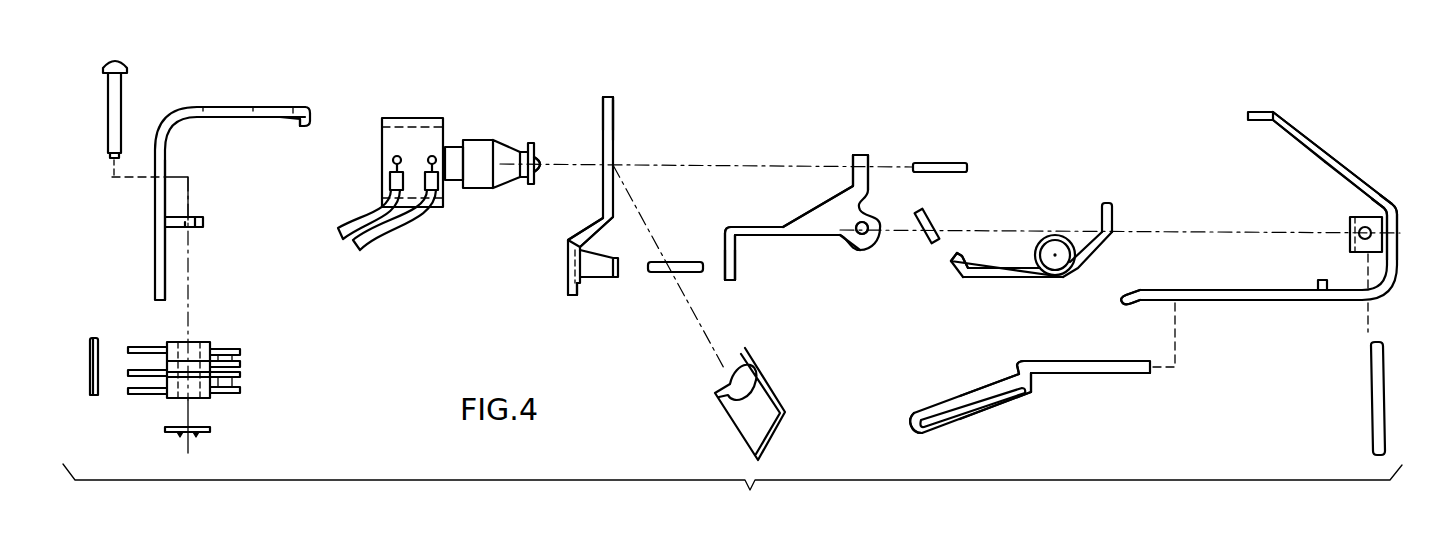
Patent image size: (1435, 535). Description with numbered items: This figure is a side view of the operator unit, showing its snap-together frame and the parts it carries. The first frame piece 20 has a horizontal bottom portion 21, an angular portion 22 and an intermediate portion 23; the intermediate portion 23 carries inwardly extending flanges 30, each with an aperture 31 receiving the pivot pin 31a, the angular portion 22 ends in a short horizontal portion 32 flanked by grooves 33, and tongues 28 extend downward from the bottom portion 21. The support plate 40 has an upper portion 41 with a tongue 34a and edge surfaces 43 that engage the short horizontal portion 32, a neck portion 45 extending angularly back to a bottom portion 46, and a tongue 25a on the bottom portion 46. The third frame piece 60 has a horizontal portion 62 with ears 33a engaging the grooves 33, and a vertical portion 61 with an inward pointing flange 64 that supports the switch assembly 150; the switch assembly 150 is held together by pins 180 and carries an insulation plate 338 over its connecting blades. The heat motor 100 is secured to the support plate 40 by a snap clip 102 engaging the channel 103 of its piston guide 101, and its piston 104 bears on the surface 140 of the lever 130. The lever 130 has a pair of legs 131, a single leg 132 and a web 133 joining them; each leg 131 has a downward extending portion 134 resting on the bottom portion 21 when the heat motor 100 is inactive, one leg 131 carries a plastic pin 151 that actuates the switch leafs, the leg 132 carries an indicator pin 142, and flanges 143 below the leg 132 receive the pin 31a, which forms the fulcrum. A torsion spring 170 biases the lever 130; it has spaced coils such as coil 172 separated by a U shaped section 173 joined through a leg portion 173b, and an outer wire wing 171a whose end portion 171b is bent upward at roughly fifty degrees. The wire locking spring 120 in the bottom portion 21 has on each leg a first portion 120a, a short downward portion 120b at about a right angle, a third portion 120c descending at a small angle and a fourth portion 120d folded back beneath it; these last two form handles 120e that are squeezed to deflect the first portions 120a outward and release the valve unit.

The switch assembly pin 180 is at (126, 64).
The third frame piece 60 is at (244, 92).
The horizontal portion 62 is at (273, 107).
The ears 33a is at (309, 113).
The vertical portion 61 is at (167, 152).
The inward pointing flange 64 is at (203, 222).
The switch assembly 150 is at (220, 330).
The insulation plate 338 is at (98, 395).
The heat motor 100 is at (428, 112).
The channel 103 is at (453, 147).
The piston guide 101 is at (486, 140).
The piston 104 is at (542, 165).
The support plate 40 is at (599, 108).
The tongue 34a is at (613, 100).
The edge surfaces 43 is at (613, 110).
The upper portion 41 is at (613, 167).
The neck portion 45 is at (580, 235).
The bottom portion 46 is at (568, 272).
The tongue 25a is at (575, 295).
The plastic pin 151 is at (674, 262).
The snap clip 102 is at (780, 403).
The surface 140 is at (853, 167).
The single leg 132 is at (863, 157).
The indicator pin 142 is at (967, 162).
The legs 131 is at (735, 227).
The web 133 is at (823, 205).
The downward extending portion 134 is at (740, 257).
The lever 130 is at (855, 245).
The flanges 143 is at (857, 232).
The end portion 171b is at (933, 218).
The outer wire wing 171a is at (983, 270).
The torsion spring 170 is at (1015, 283).
The coil 172 is at (1053, 233).
The U shaped section 173 is at (1093, 222).
The leg portion 173b is at (1088, 250).
The tongues 28 is at (1125, 294).
The horizontal bottom portion 21 is at (1282, 303).
The first frame piece 20 is at (1303, 147).
The short horizontal portion 32 is at (1258, 112).
The grooves 33 is at (1288, 122).
The angular portion 22 is at (1341, 160).
The intermediate portion 23 is at (1396, 210).
The aperture 31 is at (1350, 230).
The flanges 30 is at (1386, 294).
The pivot pin 31a is at (1368, 382).
The wire locking spring 120 is at (1118, 374).
The first portion 120a is at (1080, 374).
The short downward portion 120b is at (1030, 378).
The third portion 120c is at (947, 403).
The fourth portion 120d is at (958, 428).
The handles 120e is at (912, 432).